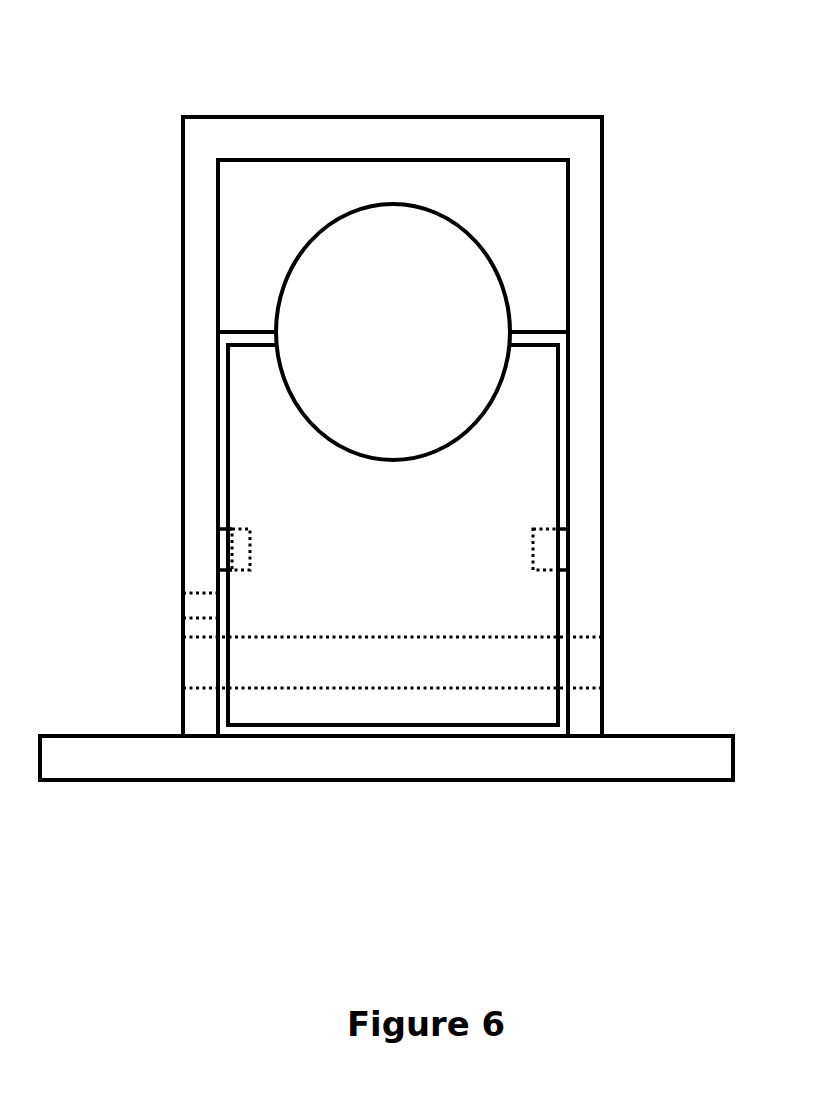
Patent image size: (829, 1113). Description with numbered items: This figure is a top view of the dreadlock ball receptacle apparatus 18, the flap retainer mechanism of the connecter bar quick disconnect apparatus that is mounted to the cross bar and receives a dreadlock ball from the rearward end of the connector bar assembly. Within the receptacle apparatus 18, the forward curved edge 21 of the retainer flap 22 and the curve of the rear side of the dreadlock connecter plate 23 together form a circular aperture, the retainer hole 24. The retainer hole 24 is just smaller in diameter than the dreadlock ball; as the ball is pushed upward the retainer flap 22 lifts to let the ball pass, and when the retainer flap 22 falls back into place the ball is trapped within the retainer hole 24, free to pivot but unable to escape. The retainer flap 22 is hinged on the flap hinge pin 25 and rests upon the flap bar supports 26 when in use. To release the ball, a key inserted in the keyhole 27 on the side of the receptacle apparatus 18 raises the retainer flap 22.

The dreadlock ball receptacle apparatus 18 is at (587, 280).
The forward curved edge 21 is at (422, 460).
The retainer flap 22 is at (423, 540).
The dreadlock connecter plate 23 is at (438, 185).
The retainer hole 24 is at (372, 322).
The flap hinge pin 25 is at (530, 658).
The flap bar supports 26 is at (240, 545).
The keyhole 27 is at (198, 607).